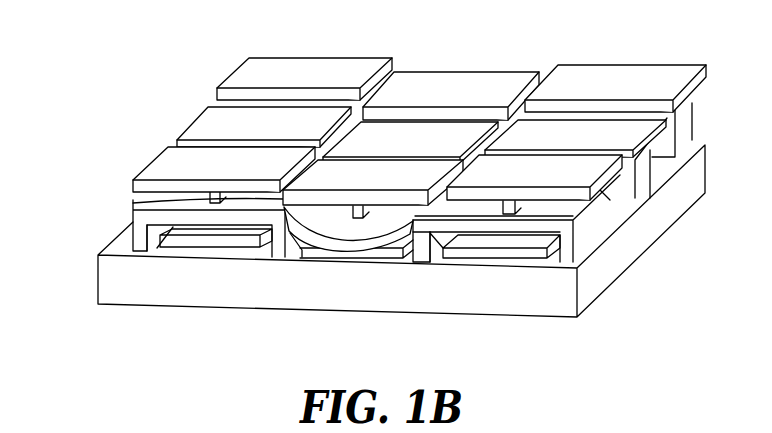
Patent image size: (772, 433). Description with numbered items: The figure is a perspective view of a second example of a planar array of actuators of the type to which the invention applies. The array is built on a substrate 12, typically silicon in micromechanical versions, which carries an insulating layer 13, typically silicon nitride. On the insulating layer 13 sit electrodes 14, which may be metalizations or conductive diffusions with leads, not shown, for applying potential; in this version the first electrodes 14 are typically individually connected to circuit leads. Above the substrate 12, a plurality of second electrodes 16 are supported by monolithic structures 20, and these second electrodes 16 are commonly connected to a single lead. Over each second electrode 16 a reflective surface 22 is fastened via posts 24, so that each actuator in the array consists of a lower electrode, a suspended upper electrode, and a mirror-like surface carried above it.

The substrate 12 is at (112, 282).
The insulating layer 13 is at (360, 296).
The electrodes 14 is at (232, 252).
The second electrodes 16 is at (193, 222).
The monolithic structures 20 is at (137, 238).
The reflective surface 22 is at (287, 70).
The posts 24 is at (147, 201).